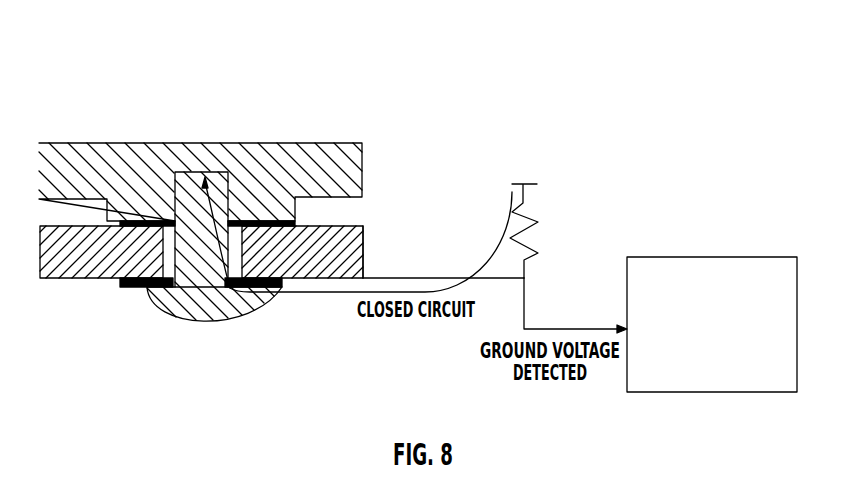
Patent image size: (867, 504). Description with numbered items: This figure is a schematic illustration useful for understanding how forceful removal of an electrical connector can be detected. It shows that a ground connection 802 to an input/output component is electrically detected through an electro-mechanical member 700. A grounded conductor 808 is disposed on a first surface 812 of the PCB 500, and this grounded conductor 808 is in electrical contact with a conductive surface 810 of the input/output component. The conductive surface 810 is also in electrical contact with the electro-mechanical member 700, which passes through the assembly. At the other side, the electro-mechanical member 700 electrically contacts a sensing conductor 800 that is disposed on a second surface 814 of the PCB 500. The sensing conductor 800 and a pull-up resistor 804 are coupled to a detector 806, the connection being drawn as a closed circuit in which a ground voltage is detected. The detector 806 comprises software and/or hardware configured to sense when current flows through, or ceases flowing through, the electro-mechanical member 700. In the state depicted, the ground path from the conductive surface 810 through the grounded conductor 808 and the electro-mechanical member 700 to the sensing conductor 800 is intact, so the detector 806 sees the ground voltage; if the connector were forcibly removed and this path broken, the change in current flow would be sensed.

The PCB 500 is at (85, 265).
The electro-mechanical member 700 is at (217, 300).
The sensing conductor 800 is at (143, 304).
The ground connection 802 is at (143, 211).
The pull-up resistor 804 is at (548, 233).
The detector 806 is at (697, 345).
The grounded conductor 808 is at (294, 222).
The conductive surface 810 is at (264, 208).
The first surface 812 is at (262, 222).
The second surface 814 is at (363, 247).